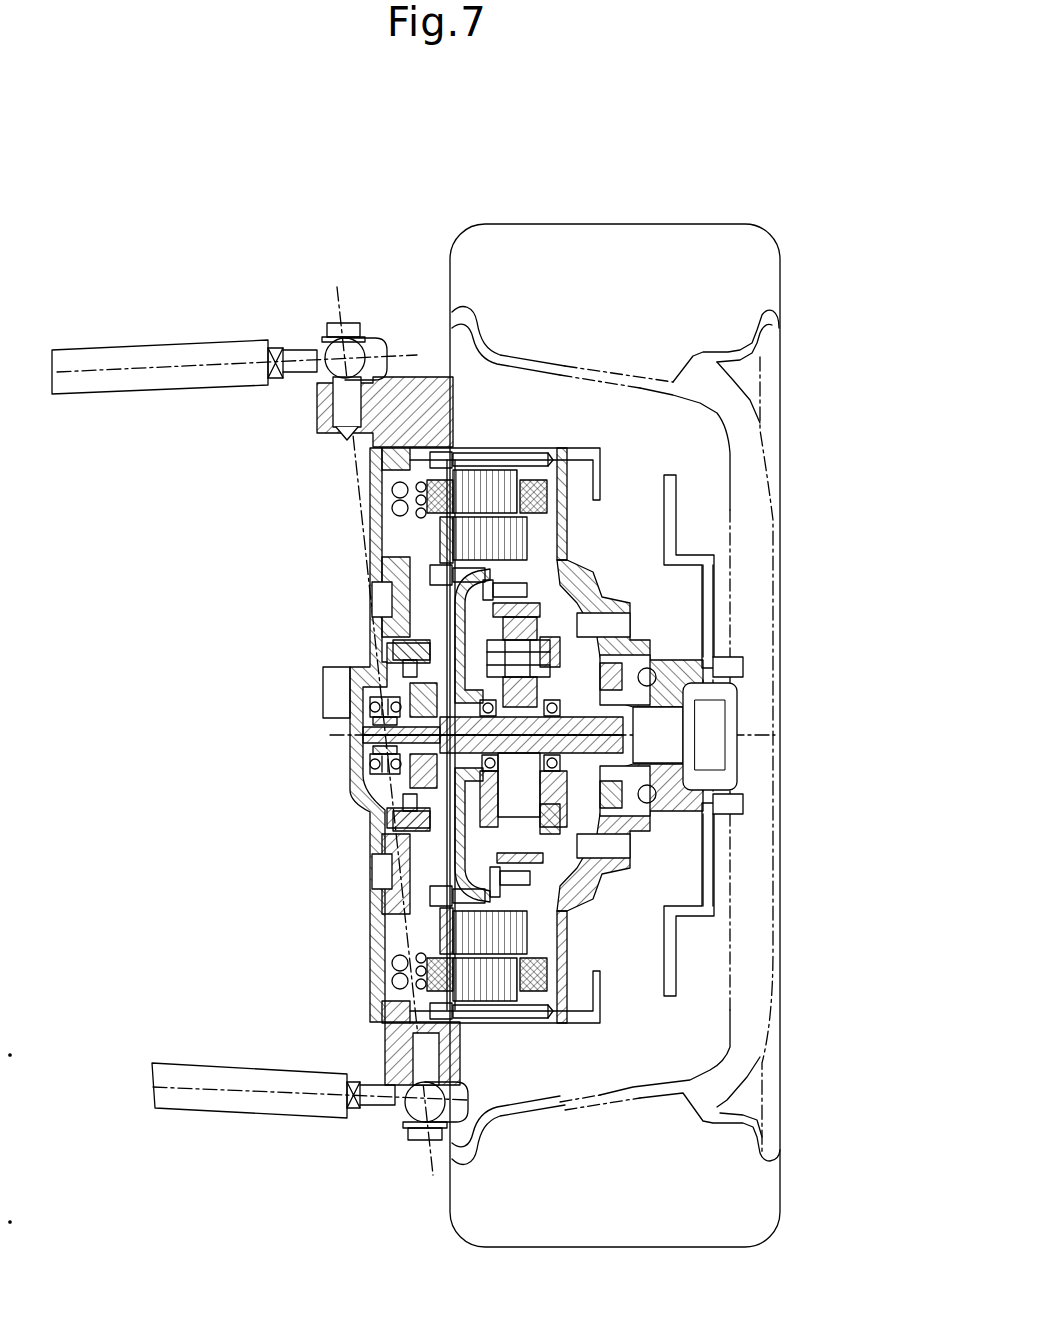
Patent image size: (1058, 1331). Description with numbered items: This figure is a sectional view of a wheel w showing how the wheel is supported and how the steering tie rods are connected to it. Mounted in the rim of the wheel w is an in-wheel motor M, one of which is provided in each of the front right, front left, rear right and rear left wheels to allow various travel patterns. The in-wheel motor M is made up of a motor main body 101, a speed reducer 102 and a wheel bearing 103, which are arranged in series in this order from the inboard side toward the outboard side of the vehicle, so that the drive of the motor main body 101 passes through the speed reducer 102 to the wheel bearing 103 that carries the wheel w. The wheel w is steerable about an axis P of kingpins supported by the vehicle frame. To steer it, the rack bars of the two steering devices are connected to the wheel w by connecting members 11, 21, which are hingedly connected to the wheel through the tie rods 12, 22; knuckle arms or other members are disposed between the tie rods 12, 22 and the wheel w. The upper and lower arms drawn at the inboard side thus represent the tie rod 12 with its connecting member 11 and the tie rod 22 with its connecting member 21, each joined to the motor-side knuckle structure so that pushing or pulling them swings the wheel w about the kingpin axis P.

The wheel W is at (660, 214).
The axis of kingpins P is at (355, 468).
The in-wheel motor M is at (405, 880).
The motor main body 101 is at (435, 540).
The speed reducer 102 is at (524, 775).
The wheel bearing 103 is at (650, 882).
The tie rod 12 is at (148, 357).
The connecting member 11 is at (281, 322).
The tie rod 22 is at (277, 1108).
The connecting member 21 is at (335, 1165).